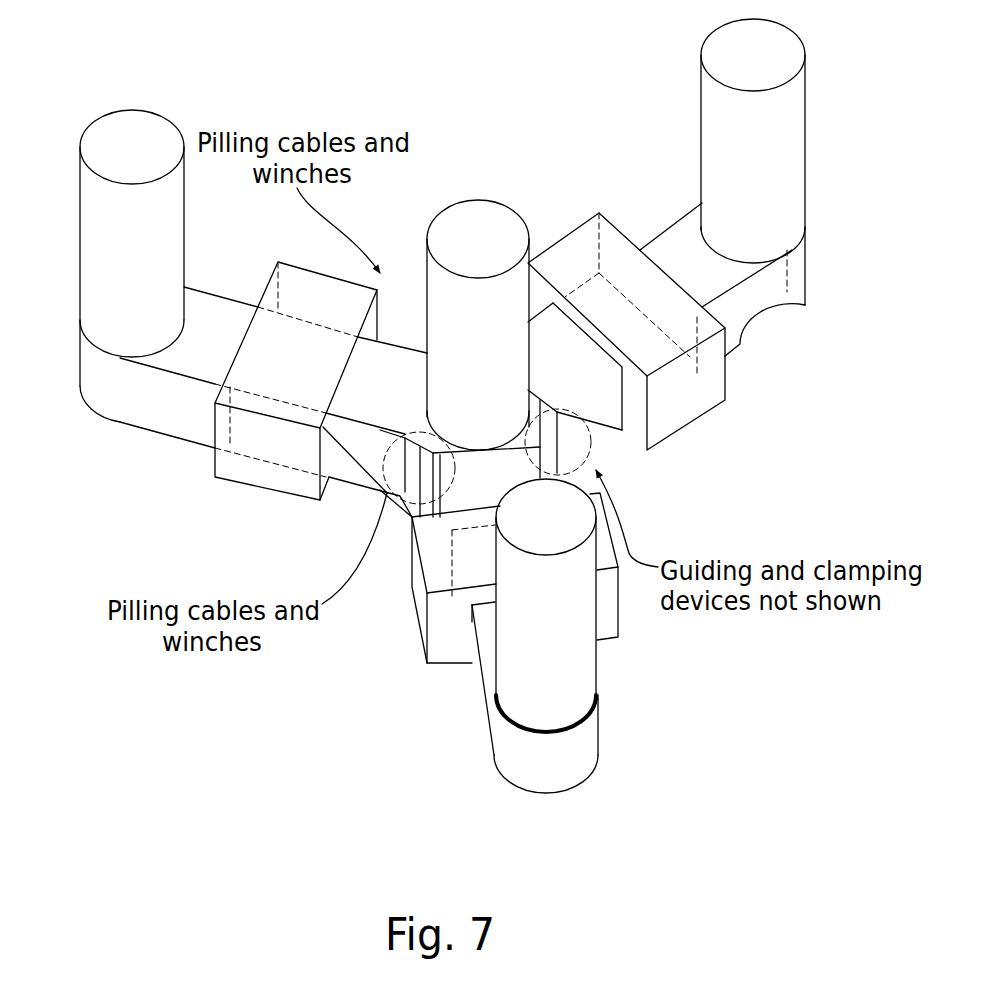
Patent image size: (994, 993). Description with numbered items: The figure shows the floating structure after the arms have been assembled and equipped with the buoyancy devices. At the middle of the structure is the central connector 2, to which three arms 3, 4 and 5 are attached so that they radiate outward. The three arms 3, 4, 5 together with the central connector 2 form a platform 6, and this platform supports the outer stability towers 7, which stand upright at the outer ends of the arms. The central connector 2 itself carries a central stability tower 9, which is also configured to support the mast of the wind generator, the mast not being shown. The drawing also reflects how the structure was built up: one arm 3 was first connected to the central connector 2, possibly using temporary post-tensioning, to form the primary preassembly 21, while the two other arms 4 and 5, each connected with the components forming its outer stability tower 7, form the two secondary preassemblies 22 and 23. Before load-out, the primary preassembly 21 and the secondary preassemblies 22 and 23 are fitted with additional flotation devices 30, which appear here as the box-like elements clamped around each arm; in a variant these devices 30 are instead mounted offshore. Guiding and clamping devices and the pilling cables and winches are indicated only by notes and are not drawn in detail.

The central connector 2 is at (396, 516).
The arm 3 is at (155, 417).
The arm 4 is at (763, 315).
The arm 5 is at (487, 622).
The platform 6 is at (471, 738).
The outer stability tower 7 is at (98, 225).
The central stability tower 9 is at (427, 280).
The primary preassembly 21 is at (237, 252).
The secondary preassembly 22 is at (657, 202).
The secondary preassembly 23 is at (614, 727).
The additional flotation device 30 is at (260, 472).